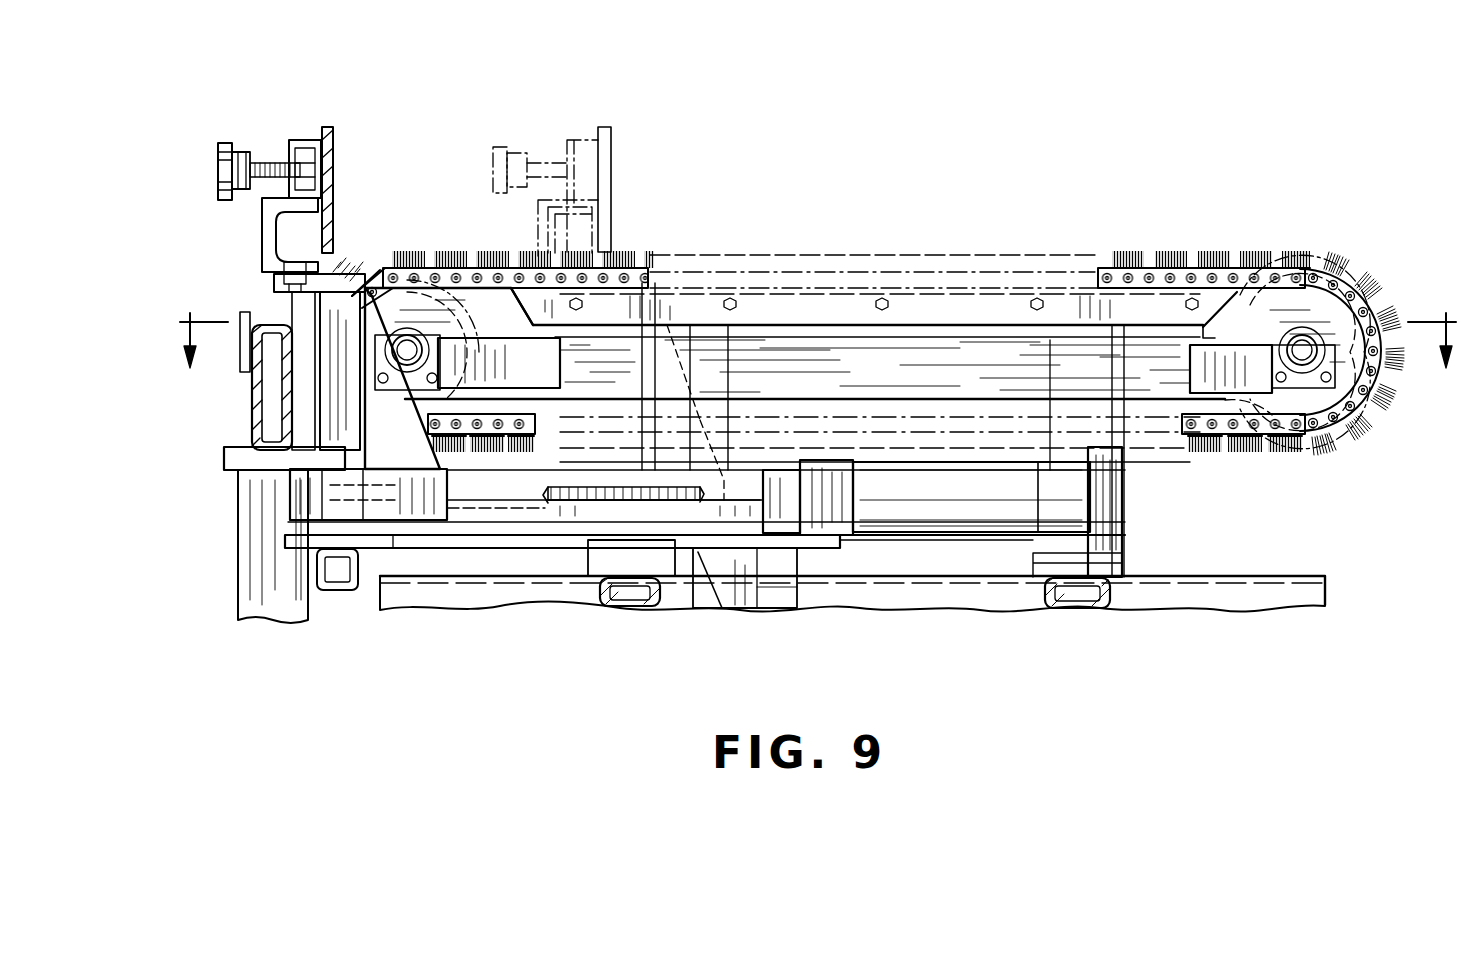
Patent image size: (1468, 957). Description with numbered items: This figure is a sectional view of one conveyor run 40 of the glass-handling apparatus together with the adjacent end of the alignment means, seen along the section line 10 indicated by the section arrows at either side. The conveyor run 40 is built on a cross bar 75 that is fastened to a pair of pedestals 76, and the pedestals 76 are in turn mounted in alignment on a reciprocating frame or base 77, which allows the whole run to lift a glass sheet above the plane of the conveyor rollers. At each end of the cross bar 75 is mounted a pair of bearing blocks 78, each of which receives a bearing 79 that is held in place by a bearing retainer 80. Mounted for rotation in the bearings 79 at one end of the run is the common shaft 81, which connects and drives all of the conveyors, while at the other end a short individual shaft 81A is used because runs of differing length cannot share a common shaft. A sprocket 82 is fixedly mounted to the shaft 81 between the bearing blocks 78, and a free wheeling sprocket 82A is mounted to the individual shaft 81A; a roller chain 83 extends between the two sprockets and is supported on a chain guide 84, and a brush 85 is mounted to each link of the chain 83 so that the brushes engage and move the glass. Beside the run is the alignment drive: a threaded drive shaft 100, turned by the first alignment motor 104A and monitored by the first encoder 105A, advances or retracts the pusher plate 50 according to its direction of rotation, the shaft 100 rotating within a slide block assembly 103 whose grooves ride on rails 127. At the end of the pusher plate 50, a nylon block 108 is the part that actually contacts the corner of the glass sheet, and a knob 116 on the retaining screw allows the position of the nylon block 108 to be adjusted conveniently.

The section line 10- 10 is at (810, 328).
The conveyor run 40 is at (828, 215).
The pusher plate 50 is at (303, 140).
The cross bar 75 is at (1168, 390).
The pedestal 76 is at (668, 360).
The reciprocating frame or base 77 is at (985, 598).
The bearing block 78 is at (531, 396).
The bearing 79 is at (445, 305).
The bearing retainer 80 is at (1342, 360).
The shaft 81 is at (1306, 372).
The individual shaft 81A is at (442, 369).
The sprocket 82 is at (1281, 312).
The free wheeling sprocket 82A is at (396, 308).
The roller chain 83 is at (428, 270).
The chain guide 84 is at (934, 312).
The brush 85 is at (580, 262).
The threaded drive shaft 100 is at (690, 505).
The slide block assembly 103 is at (408, 545).
The first alignment motor 104A is at (933, 522).
The first encoder 105A is at (1092, 510).
The nylon block 108 is at (333, 148).
The knob 116 is at (228, 165).
The rail 127 is at (462, 500).